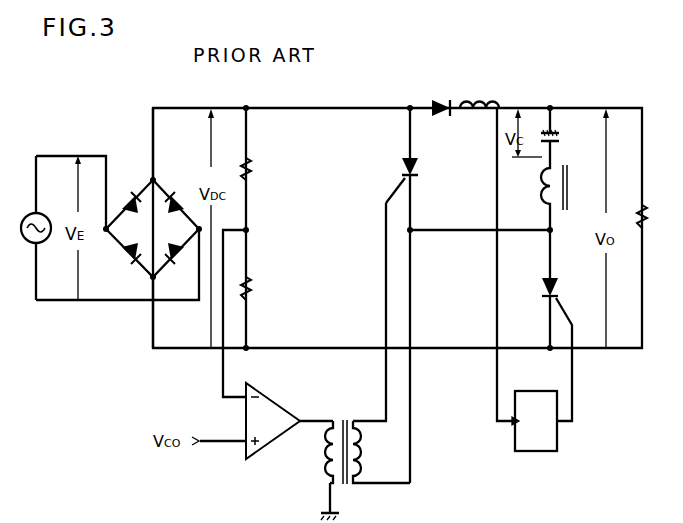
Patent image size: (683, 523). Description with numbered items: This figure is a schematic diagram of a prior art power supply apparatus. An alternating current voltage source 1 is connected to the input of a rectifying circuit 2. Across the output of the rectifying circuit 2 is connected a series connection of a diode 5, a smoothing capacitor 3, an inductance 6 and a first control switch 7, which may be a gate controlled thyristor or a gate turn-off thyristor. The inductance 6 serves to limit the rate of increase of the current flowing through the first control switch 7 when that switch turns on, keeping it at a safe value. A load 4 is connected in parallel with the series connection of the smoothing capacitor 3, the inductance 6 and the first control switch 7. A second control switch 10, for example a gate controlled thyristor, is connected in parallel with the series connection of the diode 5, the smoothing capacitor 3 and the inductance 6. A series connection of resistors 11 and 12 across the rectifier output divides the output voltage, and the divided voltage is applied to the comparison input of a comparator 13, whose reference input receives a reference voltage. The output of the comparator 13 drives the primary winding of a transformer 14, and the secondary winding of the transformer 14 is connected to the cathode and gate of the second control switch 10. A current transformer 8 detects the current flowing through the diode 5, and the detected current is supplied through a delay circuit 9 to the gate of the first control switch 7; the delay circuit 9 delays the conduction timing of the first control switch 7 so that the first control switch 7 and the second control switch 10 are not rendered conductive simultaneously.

The alternating current voltage source 1 is at (30, 213).
The rectifying circuit 2 is at (138, 176).
The smoothing capacitor 3 is at (558, 134).
The load 4 is at (650, 223).
The diode 5 is at (441, 103).
The inductance 6 is at (571, 186).
The first control switch 7 is at (558, 286).
The current transformer 8 is at (485, 103).
The delay circuit 9 is at (539, 452).
The second control switch 10 is at (416, 173).
The resistor 11 is at (256, 170).
The resistor 12 is at (256, 290).
The comparator 13 is at (268, 409).
The transformer 14 is at (347, 410).